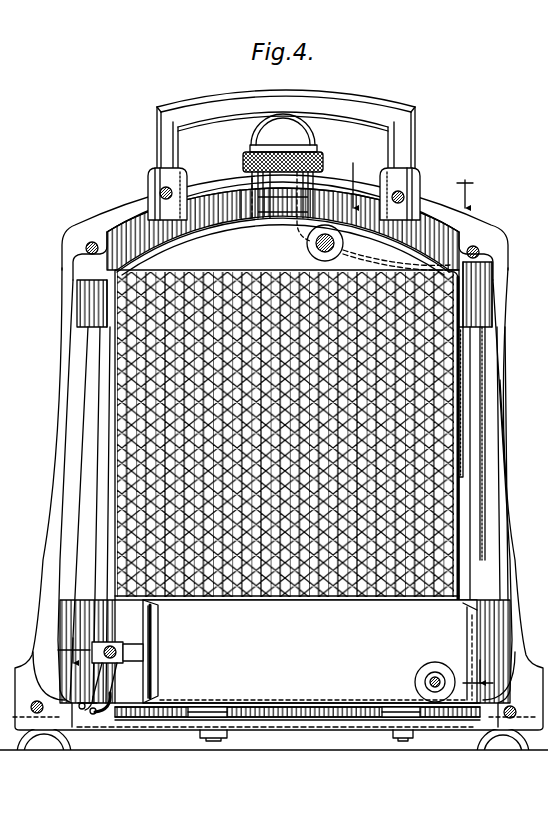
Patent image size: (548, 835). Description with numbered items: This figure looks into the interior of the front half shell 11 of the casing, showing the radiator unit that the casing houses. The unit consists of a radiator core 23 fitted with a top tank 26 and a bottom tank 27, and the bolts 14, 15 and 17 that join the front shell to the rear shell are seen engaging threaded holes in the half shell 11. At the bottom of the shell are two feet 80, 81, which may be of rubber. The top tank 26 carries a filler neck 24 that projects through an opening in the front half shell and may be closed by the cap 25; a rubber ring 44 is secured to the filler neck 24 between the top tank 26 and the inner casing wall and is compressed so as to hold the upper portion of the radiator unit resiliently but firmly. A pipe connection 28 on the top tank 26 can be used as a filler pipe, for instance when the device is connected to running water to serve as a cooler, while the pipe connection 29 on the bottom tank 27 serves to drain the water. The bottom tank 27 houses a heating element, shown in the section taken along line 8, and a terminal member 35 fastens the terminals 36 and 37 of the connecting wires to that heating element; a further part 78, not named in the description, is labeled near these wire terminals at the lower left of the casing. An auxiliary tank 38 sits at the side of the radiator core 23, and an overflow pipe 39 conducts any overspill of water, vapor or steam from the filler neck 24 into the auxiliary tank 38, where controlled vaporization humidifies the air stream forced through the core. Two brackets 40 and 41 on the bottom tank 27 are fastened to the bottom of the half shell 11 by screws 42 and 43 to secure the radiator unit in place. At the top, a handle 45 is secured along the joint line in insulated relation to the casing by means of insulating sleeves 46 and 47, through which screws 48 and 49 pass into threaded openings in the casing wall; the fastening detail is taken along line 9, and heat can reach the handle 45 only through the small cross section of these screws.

The section line 8— 8 is at (276, 646).
The section line 9— 9 is at (418, 177).
The front half shell 11 is at (502, 427).
The bolt 14 is at (86, 246).
The bolt 15 is at (478, 248).
The bolt 17 is at (510, 720).
The radiator core 23 is at (118, 415).
The filler neck 24 is at (252, 180).
The cap 25 is at (305, 132).
The top tank 26 is at (147, 250).
The bottom tank 27 is at (452, 632).
The pipe connection 28 is at (306, 247).
The pipe connection 29 is at (428, 677).
The terminal member 35 is at (130, 656).
The terminal of connecting wire 36 is at (100, 683).
The terminal of connecting wire 37 is at (115, 717).
The auxiliary tank 38 is at (468, 518).
The overflow pipe 39 is at (473, 313).
The bracket 40 is at (215, 712).
The bracket 41 is at (393, 713).
The screw 42 is at (210, 740).
The screw 43 is at (408, 740).
The rubber ring 44 is at (240, 192).
The handle 45 is at (383, 108).
The insulating sleeve 46 is at (158, 180).
The insulating sleeve 47 is at (403, 196).
The screw 48 is at (408, 165).
The screw 49 is at (161, 191).
The cord 78 is at (97, 710).
The foot 80 is at (37, 745).
The foot 81 is at (483, 752).